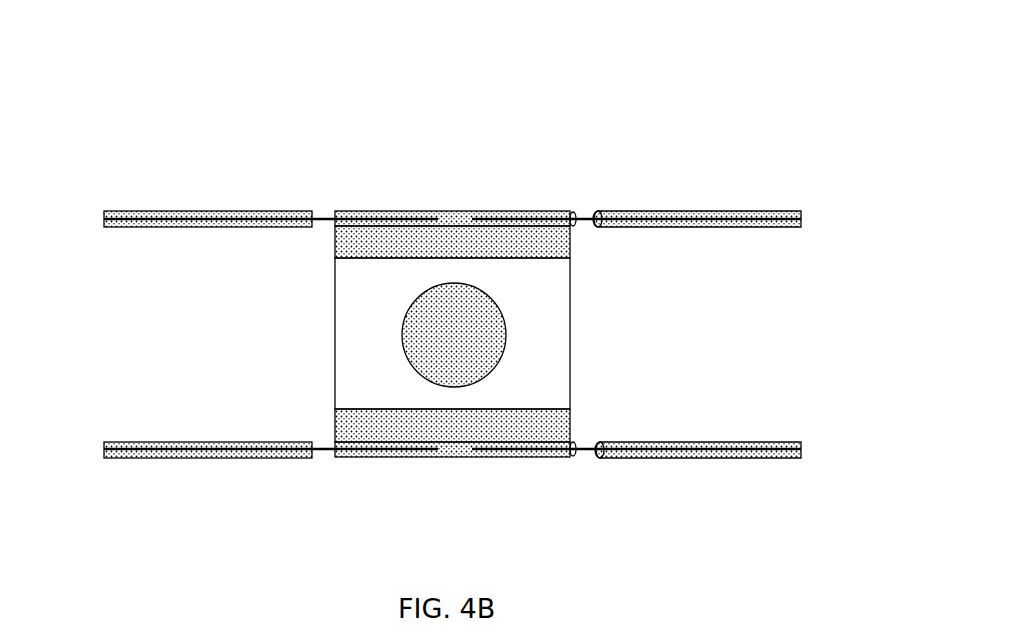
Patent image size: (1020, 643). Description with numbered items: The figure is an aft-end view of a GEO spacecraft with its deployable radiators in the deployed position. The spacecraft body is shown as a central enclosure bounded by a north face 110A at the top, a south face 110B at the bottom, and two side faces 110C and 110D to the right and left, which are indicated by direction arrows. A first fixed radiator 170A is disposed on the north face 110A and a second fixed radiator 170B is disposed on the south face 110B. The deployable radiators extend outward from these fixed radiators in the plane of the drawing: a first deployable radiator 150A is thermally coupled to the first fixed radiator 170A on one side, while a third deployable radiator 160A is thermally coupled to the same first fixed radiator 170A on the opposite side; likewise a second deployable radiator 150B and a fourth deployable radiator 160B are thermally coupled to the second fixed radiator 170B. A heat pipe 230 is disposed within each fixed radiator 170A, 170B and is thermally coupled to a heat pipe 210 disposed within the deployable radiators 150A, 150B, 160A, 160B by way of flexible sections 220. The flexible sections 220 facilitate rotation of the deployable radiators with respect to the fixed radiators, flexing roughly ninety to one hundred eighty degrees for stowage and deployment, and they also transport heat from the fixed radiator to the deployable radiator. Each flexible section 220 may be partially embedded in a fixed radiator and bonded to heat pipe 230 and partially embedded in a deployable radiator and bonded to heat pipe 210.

The north face 110A is at (468, 150).
The south face 110B is at (460, 515).
The east side of enclosure 110C is at (725, 343).
The west side of enclosure 110D is at (146, 328).
The first deployable radiator 150A is at (722, 207).
The second deployable radiator 150B is at (680, 464).
The third deployable radiator 160A is at (170, 208).
The fourth deployable radiator 160B is at (177, 465).
The first fixed radiator 170A is at (350, 208).
The second fixed radiator 170B is at (378, 465).
The heat pipe 210 is at (750, 222).
The flexible section 220 is at (582, 215).
The heat pipe 230 is at (515, 214).